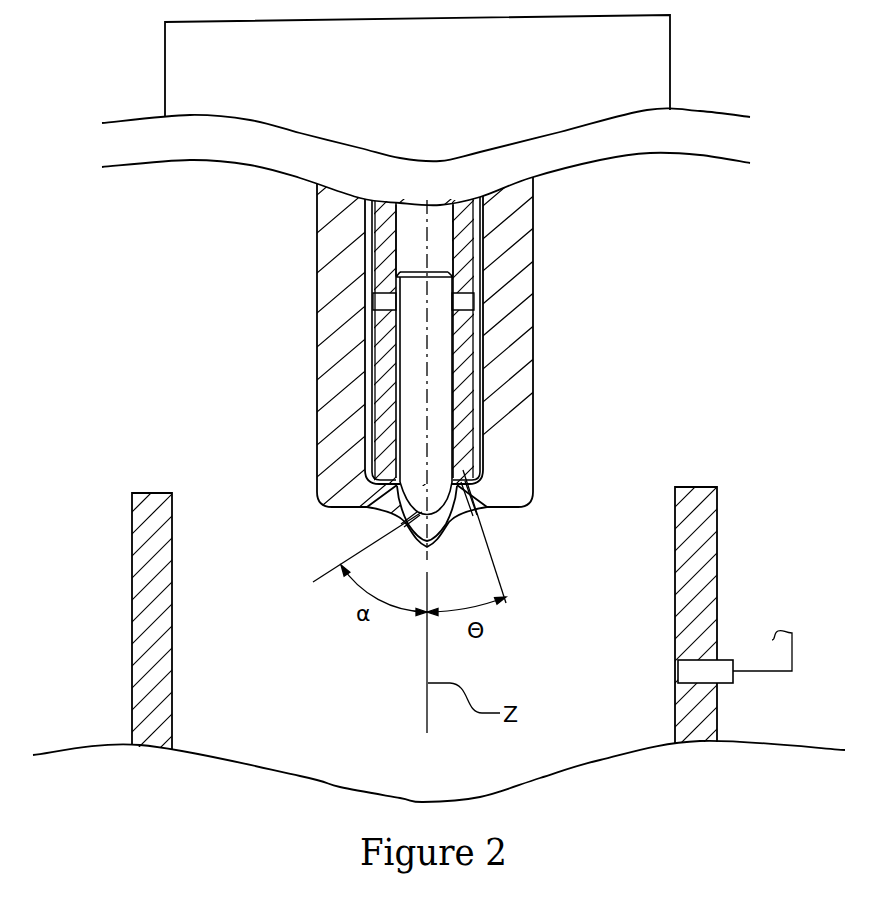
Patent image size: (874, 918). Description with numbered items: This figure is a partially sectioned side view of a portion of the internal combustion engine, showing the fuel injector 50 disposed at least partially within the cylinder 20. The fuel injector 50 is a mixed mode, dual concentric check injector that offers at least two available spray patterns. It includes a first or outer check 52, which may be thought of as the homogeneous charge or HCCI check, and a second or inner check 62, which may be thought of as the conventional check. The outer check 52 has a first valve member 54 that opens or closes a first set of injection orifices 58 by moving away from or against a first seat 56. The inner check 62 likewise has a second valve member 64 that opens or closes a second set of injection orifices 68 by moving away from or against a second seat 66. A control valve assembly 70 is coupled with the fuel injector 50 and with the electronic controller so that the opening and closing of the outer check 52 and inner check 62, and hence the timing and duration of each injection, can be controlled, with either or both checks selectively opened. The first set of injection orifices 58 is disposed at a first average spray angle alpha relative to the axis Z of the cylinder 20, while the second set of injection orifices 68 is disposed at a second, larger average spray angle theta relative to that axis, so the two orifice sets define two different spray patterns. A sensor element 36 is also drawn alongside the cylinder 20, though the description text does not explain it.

The control valve assembly 70 is at (670, 25).
The fuel injector 50 is at (536, 341).
The outer check 52 is at (365, 429).
The first valve member 54 is at (378, 446).
The first seat 56 is at (467, 476).
The first set of injection orifices 58 is at (390, 525).
The inner check 62 is at (392, 368).
The second valve member 64 is at (452, 360).
The second seat 66 is at (384, 516).
The second set of injection orifices 68 is at (447, 531).
The sensor 36 is at (733, 678).
The cylinder 20 is at (340, 728).